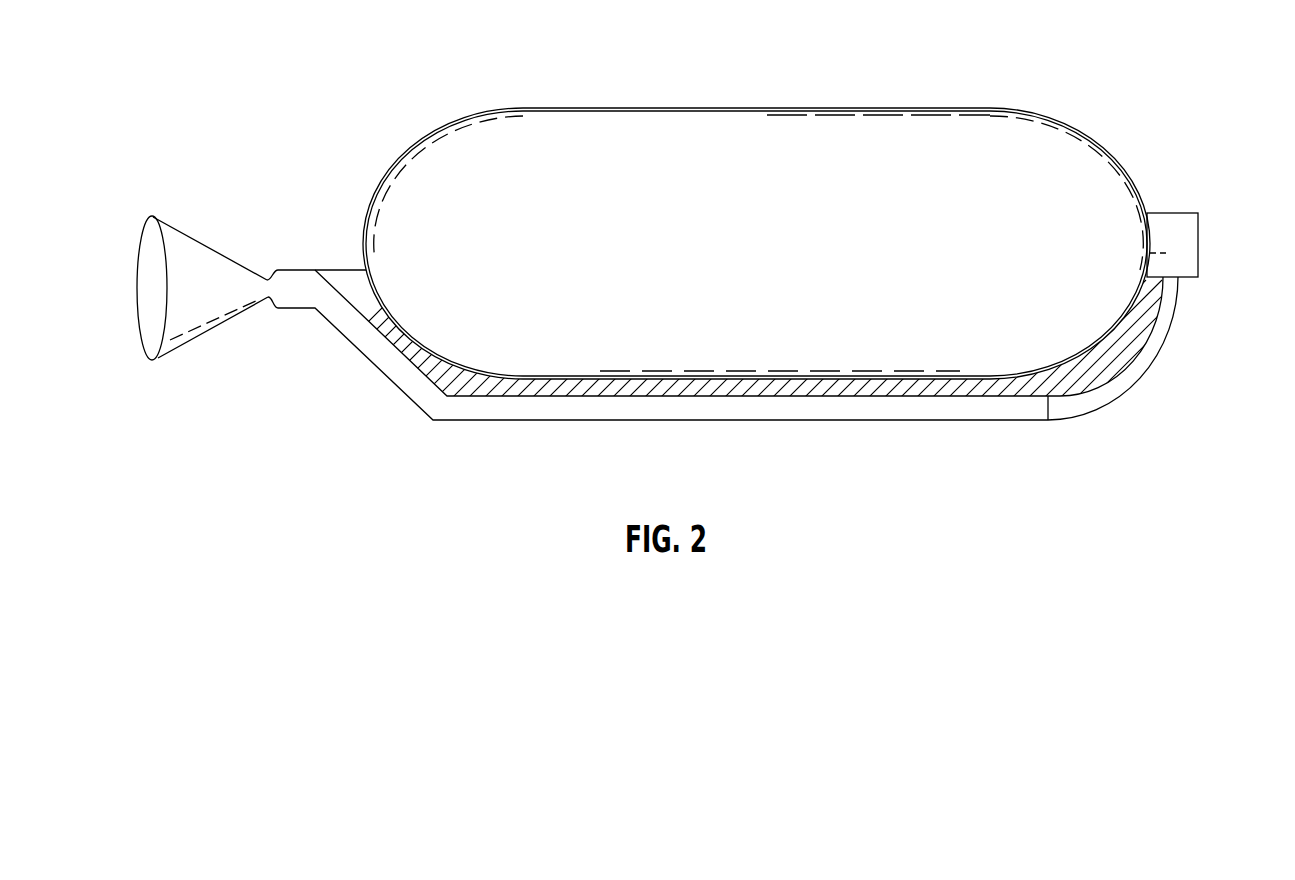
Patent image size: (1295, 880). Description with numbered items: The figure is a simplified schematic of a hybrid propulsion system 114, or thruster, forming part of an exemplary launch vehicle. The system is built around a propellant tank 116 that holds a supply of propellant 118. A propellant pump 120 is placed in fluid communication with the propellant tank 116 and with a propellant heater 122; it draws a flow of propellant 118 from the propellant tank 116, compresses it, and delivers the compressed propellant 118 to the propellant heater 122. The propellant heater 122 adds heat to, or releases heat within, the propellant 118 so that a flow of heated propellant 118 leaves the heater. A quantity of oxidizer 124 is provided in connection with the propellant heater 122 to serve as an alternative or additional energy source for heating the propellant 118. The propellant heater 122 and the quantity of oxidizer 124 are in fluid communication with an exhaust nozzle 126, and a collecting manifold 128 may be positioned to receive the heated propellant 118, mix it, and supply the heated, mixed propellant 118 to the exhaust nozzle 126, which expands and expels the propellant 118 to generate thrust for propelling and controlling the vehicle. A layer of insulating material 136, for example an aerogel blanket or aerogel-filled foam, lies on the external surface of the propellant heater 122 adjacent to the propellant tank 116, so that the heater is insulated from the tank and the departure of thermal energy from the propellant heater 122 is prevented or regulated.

The hybrid propulsion system 114 is at (786, 66).
The propellant tank 116 is at (973, 108).
The propellant 118 is at (1087, 165).
The propellant pump 120 is at (1180, 248).
The propellant heater 122 is at (1115, 374).
The quantity of oxidizer 124 is at (745, 408).
The exhaust nozzle 126 is at (180, 262).
The collecting manifold 128 is at (298, 292).
The layer of insulating material 136 is at (348, 270).